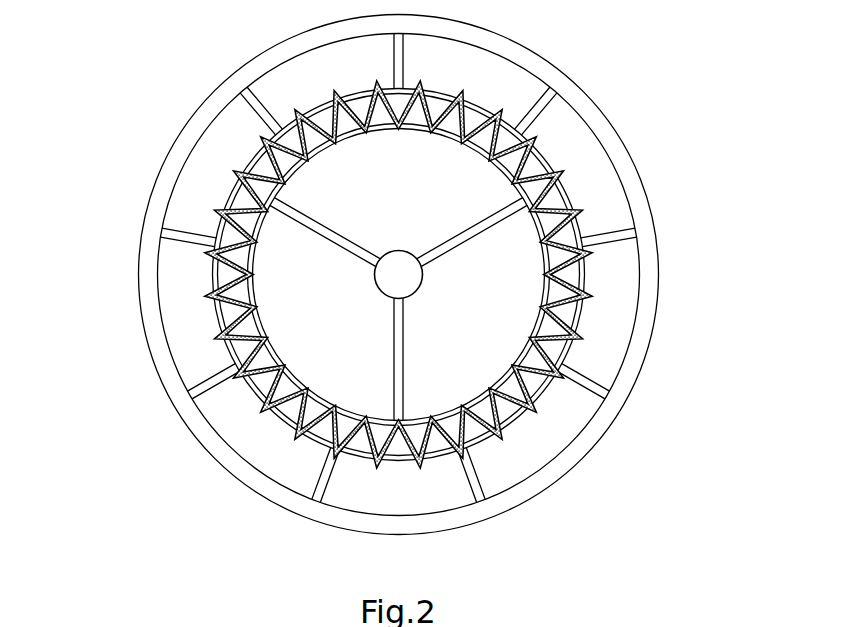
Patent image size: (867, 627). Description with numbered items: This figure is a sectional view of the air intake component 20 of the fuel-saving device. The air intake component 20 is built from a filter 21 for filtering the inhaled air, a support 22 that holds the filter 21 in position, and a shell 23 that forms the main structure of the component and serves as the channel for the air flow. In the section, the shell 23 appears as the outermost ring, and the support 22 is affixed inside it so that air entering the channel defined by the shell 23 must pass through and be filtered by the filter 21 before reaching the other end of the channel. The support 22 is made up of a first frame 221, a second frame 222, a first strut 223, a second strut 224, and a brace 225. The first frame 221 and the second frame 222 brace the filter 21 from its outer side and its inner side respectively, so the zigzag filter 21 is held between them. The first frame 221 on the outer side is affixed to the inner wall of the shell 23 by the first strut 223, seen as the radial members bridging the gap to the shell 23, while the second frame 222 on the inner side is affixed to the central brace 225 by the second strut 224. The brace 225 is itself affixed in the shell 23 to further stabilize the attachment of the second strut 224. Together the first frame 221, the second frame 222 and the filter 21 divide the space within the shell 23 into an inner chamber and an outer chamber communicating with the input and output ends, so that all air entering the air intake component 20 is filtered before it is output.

The air intake component 20 is at (150, 130).
The filter 21 is at (217, 210).
The support 22 is at (722, 170).
The shell 23 is at (207, 113).
The first frame 221 is at (578, 227).
The second frame 222 is at (585, 283).
The first strut 223 is at (607, 237).
The second strut 224 is at (403, 310).
The brace 225 is at (400, 272).